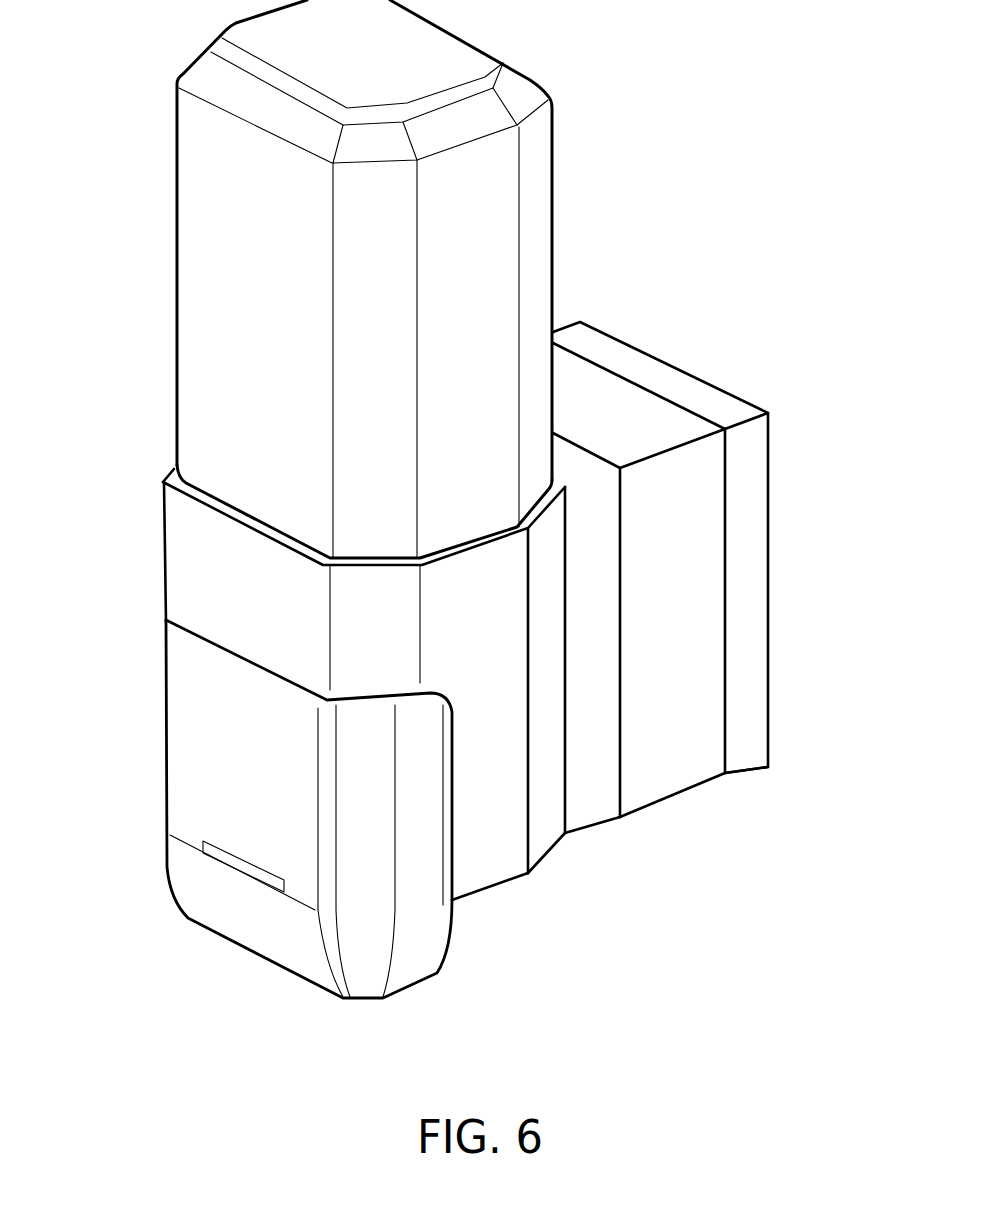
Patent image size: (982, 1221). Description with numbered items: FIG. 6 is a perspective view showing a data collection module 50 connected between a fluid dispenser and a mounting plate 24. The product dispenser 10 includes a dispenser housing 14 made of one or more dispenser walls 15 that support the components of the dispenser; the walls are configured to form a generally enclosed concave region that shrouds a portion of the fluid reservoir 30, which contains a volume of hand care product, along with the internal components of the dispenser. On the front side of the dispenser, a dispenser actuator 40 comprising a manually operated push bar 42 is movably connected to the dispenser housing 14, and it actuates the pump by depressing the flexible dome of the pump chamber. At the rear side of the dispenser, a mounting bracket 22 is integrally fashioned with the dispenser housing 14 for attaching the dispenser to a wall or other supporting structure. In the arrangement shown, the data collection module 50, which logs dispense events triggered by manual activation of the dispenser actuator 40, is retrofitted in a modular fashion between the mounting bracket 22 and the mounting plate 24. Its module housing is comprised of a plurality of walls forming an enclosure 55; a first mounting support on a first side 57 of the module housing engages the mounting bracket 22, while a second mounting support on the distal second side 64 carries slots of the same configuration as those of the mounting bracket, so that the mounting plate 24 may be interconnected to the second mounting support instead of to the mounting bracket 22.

The product dispenser 10 is at (136, 276).
The fluid reservoir 30 is at (213, 173).
The dispenser walls 15 is at (192, 547).
The dispenser housing 14 is at (195, 582).
The push bar 42 is at (192, 725).
The dispenser actuator 40 is at (200, 772).
The mounting plate 24 is at (750, 445).
The second side 64 is at (745, 606).
The mounting bracket 22 is at (602, 817).
The data collection module 50 is at (678, 783).
The enclosure 55 is at (713, 770).
The first side 57 is at (611, 759).